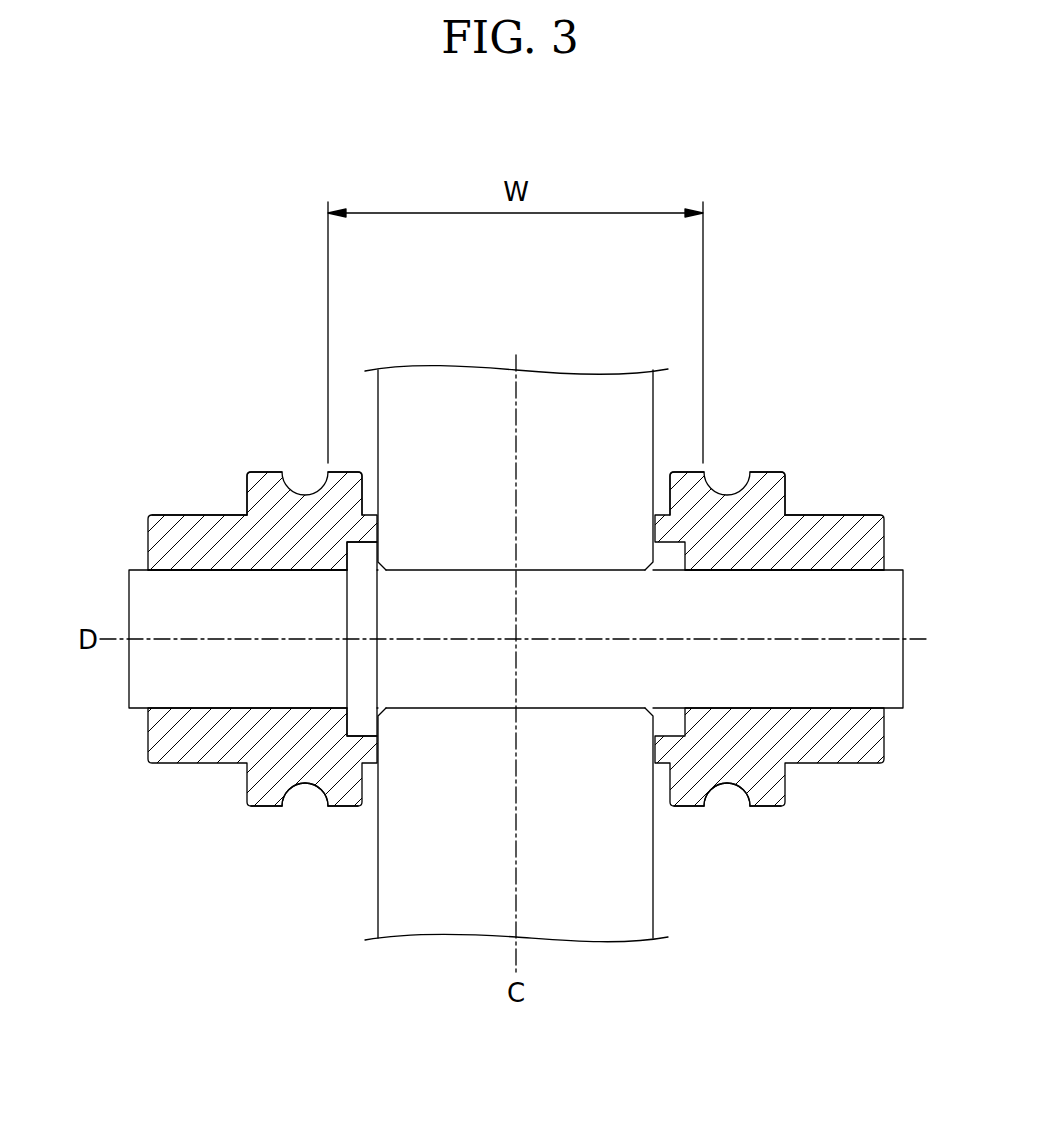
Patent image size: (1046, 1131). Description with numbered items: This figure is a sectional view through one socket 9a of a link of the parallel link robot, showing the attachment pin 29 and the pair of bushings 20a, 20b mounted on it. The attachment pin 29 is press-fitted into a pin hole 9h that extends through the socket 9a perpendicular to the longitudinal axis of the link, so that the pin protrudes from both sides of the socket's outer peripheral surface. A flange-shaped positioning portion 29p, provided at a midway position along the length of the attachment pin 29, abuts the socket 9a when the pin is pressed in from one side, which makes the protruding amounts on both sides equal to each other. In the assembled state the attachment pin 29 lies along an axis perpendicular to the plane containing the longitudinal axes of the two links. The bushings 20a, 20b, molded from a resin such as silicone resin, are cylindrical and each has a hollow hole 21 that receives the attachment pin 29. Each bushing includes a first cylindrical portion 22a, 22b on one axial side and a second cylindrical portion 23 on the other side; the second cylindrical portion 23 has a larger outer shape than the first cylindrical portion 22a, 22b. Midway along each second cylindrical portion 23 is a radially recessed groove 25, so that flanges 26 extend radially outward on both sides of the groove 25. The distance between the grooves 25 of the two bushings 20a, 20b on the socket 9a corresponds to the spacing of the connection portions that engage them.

The socket 9a is at (586, 356).
The pin hole 9h is at (432, 690).
The bushing 20a is at (132, 526).
The bushing 20b is at (898, 502).
The hollow hole 21 is at (168, 583).
The first cylindrical portion 22a is at (210, 498).
The first cylindrical portion 22b is at (855, 498).
The second cylindrical portion 23 is at (262, 456).
The groove 25 is at (305, 826).
The flange 26 is at (258, 812).
The attachment pin 29 is at (128, 677).
The positioning portion 29p is at (368, 535).